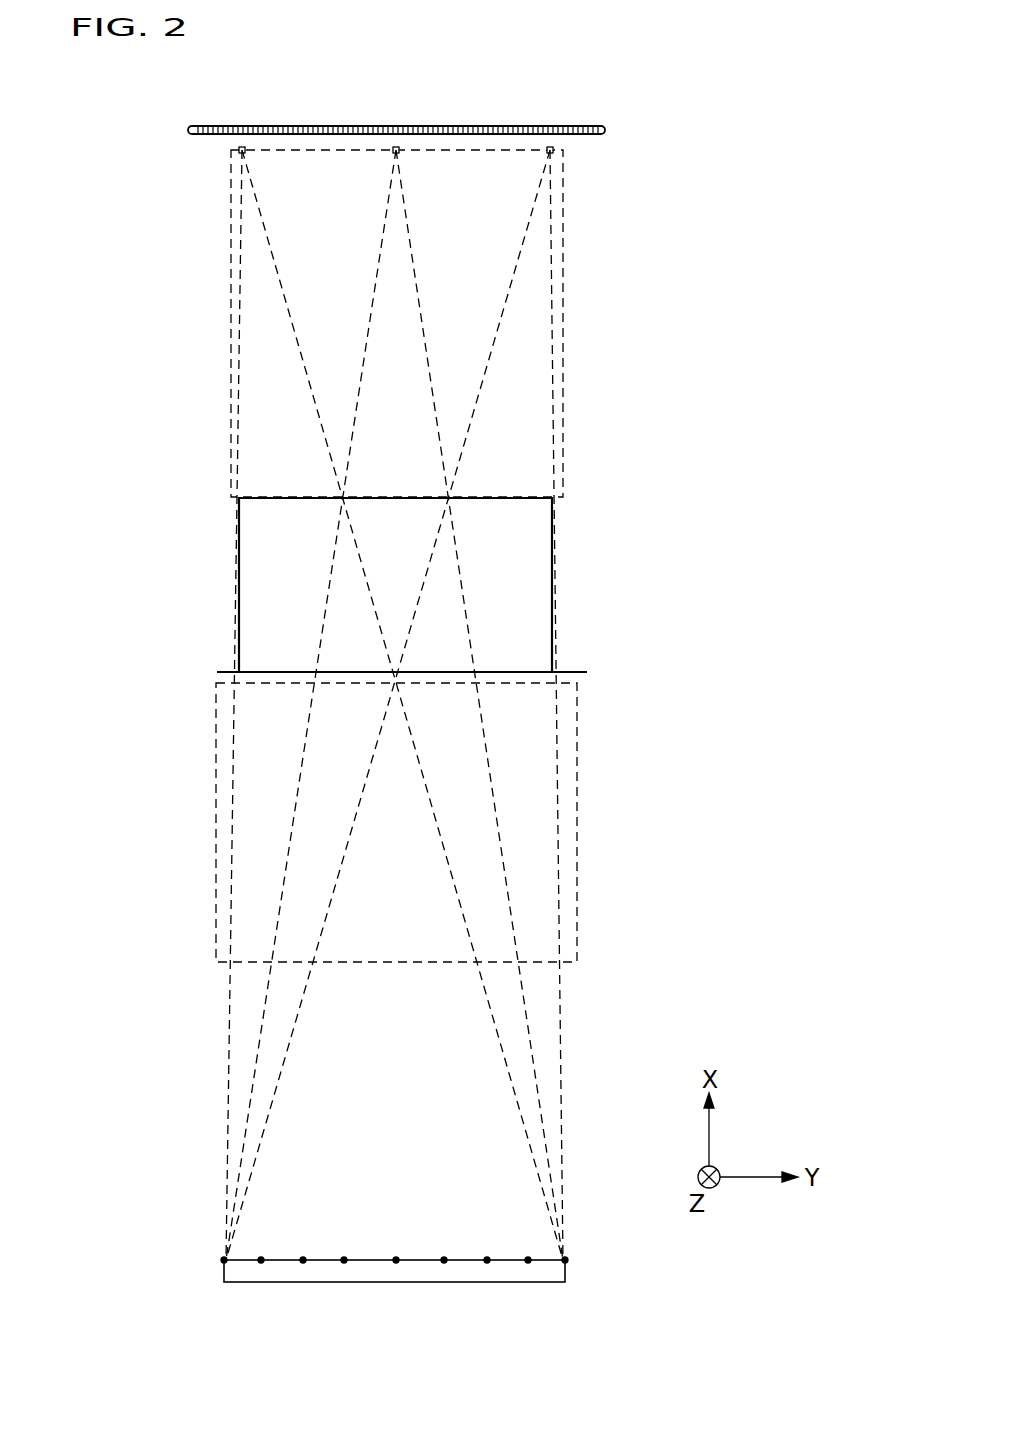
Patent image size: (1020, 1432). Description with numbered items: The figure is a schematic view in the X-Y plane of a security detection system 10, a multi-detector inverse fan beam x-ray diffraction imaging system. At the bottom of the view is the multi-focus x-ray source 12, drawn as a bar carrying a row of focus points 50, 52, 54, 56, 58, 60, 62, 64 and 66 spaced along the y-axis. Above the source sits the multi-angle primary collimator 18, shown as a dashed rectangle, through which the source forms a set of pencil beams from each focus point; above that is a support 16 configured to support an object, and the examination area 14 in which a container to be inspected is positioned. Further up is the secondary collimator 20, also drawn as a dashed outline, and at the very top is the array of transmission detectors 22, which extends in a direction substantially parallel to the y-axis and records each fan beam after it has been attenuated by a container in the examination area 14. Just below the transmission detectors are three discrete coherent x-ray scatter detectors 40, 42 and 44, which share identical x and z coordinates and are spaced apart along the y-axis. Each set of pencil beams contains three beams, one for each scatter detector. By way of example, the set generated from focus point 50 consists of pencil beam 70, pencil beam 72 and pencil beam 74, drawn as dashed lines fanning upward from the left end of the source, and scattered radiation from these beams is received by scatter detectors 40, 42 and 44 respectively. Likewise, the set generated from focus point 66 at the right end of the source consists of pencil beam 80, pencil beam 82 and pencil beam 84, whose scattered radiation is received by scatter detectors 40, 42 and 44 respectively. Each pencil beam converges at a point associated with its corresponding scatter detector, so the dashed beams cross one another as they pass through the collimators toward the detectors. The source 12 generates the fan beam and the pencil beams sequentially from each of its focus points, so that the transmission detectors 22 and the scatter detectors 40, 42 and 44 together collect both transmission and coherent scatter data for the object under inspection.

The security detection system 10 is at (610, 213).
The multi-focus x-ray source 12 is at (467, 1260).
The examination area 14 is at (553, 598).
The support 16 is at (578, 672).
The multi-angle primary collimator 18 is at (578, 848).
The secondary collimator 20 is at (565, 306).
The array of transmission detectors 22 is at (228, 126).
The scatter detector 40 is at (239, 154).
The scatter detector 42 is at (393, 154).
The scatter detector 44 is at (547, 154).
The focus point 50 is at (224, 1260).
The focus point 52 is at (261, 1262).
The focus point 54 is at (303, 1262).
The focus point 56 is at (344, 1262).
The focus point 58 is at (396, 1262).
The focus point 60 is at (444, 1262).
The focus point 62 is at (487, 1262).
The focus point 64 is at (528, 1262).
The focus point 66 is at (567, 1260).
The pencil beam 70 is at (230, 1151).
The pencil beam 72 is at (248, 1110).
The pencil beam 74 is at (276, 1080).
The pencil beam 80 is at (508, 1050).
The pencil beam 82 is at (540, 1084).
The pencil beam 84 is at (565, 1150).